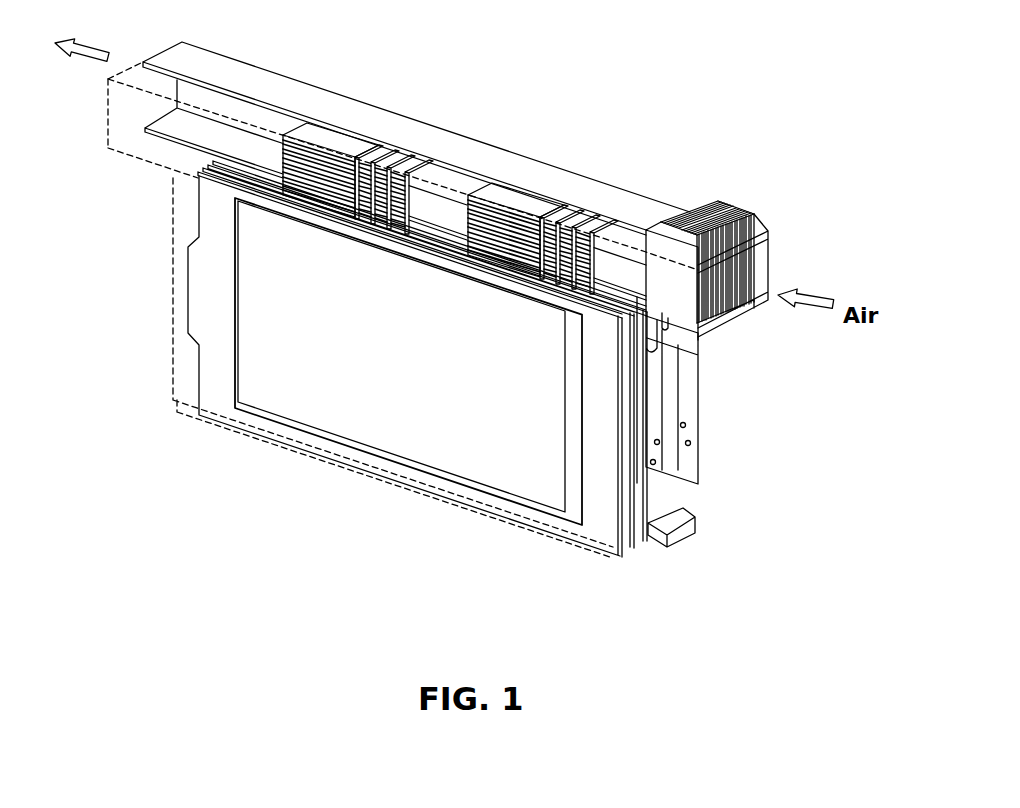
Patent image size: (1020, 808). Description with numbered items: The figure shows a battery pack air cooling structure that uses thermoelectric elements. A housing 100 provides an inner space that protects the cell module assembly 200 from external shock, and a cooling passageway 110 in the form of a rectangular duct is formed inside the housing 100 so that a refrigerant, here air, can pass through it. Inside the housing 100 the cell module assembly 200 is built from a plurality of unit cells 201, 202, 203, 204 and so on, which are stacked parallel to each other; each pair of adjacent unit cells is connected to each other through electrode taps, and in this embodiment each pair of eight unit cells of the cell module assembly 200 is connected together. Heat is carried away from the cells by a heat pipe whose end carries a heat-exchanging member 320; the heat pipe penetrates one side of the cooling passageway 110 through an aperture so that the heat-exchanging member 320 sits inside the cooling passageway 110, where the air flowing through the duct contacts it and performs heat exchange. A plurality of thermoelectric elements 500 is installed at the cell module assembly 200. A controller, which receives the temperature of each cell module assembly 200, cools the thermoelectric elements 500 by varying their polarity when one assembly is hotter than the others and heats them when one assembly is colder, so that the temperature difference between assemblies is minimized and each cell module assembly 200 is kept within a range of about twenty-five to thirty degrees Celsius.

The housing 100 is at (440, 120).
The cooling passageway 110 is at (608, 233).
The cell module assembly 200 is at (507, 422).
The unit cell 201 is at (615, 550).
The unit cell 202 is at (643, 528).
The unit cell 203 is at (632, 532).
The mounting bracket 204 is at (716, 448).
The heat-exchanging member 320 is at (377, 140).
The thermoelectric element 500 is at (732, 200).